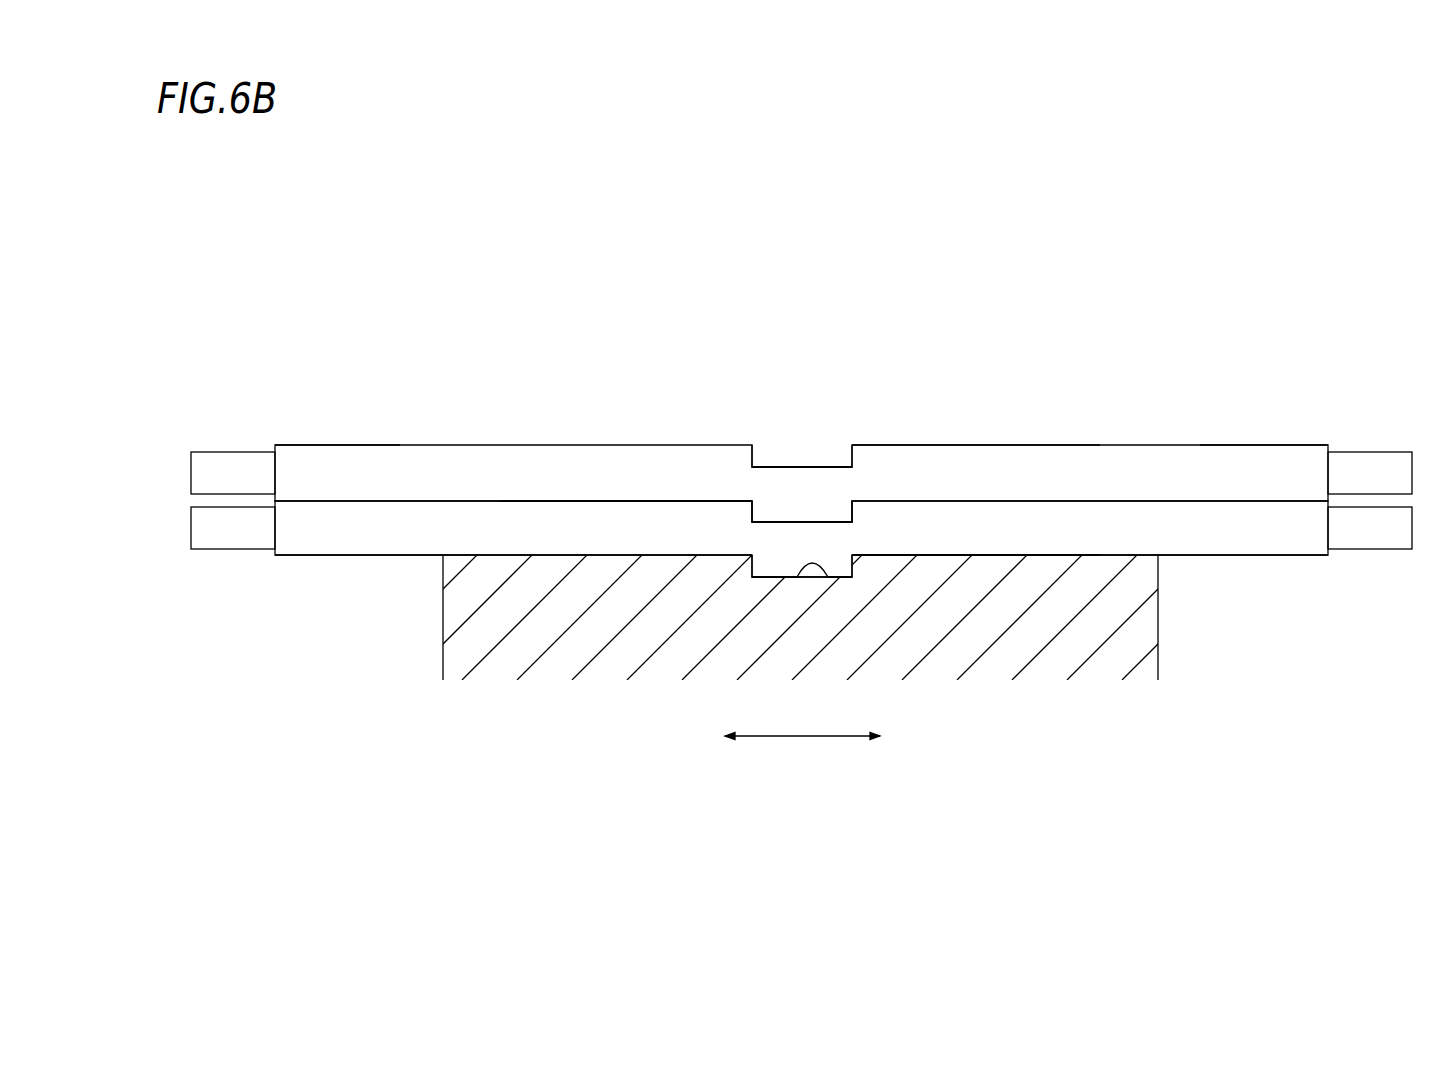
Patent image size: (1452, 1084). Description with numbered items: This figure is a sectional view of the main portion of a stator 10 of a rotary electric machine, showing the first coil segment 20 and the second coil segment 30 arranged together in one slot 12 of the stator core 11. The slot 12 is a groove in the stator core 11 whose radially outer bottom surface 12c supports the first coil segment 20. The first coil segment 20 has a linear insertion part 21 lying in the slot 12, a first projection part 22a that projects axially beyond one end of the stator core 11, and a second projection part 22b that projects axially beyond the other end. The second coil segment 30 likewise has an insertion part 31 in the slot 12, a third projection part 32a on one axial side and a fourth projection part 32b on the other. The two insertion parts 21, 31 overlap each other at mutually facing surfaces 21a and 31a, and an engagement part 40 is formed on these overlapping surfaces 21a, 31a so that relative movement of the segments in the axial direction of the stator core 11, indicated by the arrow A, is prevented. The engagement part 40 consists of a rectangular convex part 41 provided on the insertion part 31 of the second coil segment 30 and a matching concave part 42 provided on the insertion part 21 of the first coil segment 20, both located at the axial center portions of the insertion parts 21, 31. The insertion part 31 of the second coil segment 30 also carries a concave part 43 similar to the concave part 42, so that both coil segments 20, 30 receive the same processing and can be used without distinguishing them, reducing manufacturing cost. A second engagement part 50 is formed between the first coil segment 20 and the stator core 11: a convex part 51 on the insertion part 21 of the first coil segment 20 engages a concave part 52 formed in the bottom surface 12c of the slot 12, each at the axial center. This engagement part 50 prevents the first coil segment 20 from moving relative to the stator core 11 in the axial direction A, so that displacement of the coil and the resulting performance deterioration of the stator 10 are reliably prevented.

The stator 10 is at (335, 310).
The stator core 11 is at (1162, 655).
The slot 12 is at (527, 535).
The bottom surface 12c is at (1057, 553).
The first coil segment 20 is at (1273, 555).
The insertion part 21 is at (1038, 518).
The overlapping surface 21a is at (600, 517).
The first projection part 22a is at (1303, 556).
The second projection part 22b is at (348, 555).
The second coil segment 30 is at (1137, 443).
The insertion part 31 is at (1007, 458).
The overlapping surface 31a is at (552, 501).
The third projection part 32a is at (1257, 445).
The fourth projection part 32b is at (352, 445).
The engagement part 40 is at (882, 373).
The convex part 41 is at (823, 510).
The concave part 42 is at (788, 522).
The concave part 43 is at (768, 467).
The engagement part 50 is at (993, 695).
The convex part 51 is at (845, 561).
The concave part 52 is at (826, 574).
The arrow A is at (800, 740).